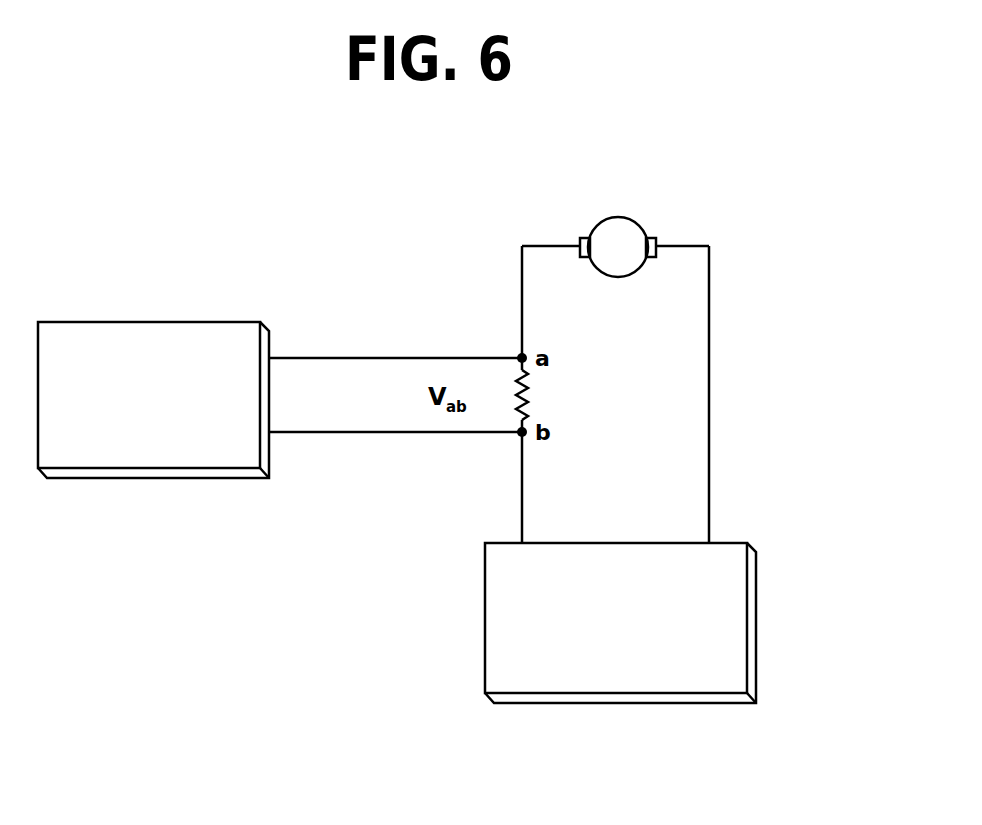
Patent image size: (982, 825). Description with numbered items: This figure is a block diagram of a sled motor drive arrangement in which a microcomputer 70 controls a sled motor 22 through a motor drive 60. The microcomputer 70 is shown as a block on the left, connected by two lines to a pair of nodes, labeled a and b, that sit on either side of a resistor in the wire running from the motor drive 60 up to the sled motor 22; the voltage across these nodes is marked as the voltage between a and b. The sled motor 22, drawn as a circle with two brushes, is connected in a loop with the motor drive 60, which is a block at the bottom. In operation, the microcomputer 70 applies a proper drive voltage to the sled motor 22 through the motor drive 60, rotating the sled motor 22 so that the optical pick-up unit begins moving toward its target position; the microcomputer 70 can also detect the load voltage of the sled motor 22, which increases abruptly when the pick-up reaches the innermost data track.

The sled motor 22 is at (634, 220).
The microcomputer 70 is at (188, 320).
The motor drive 60 is at (747, 578).